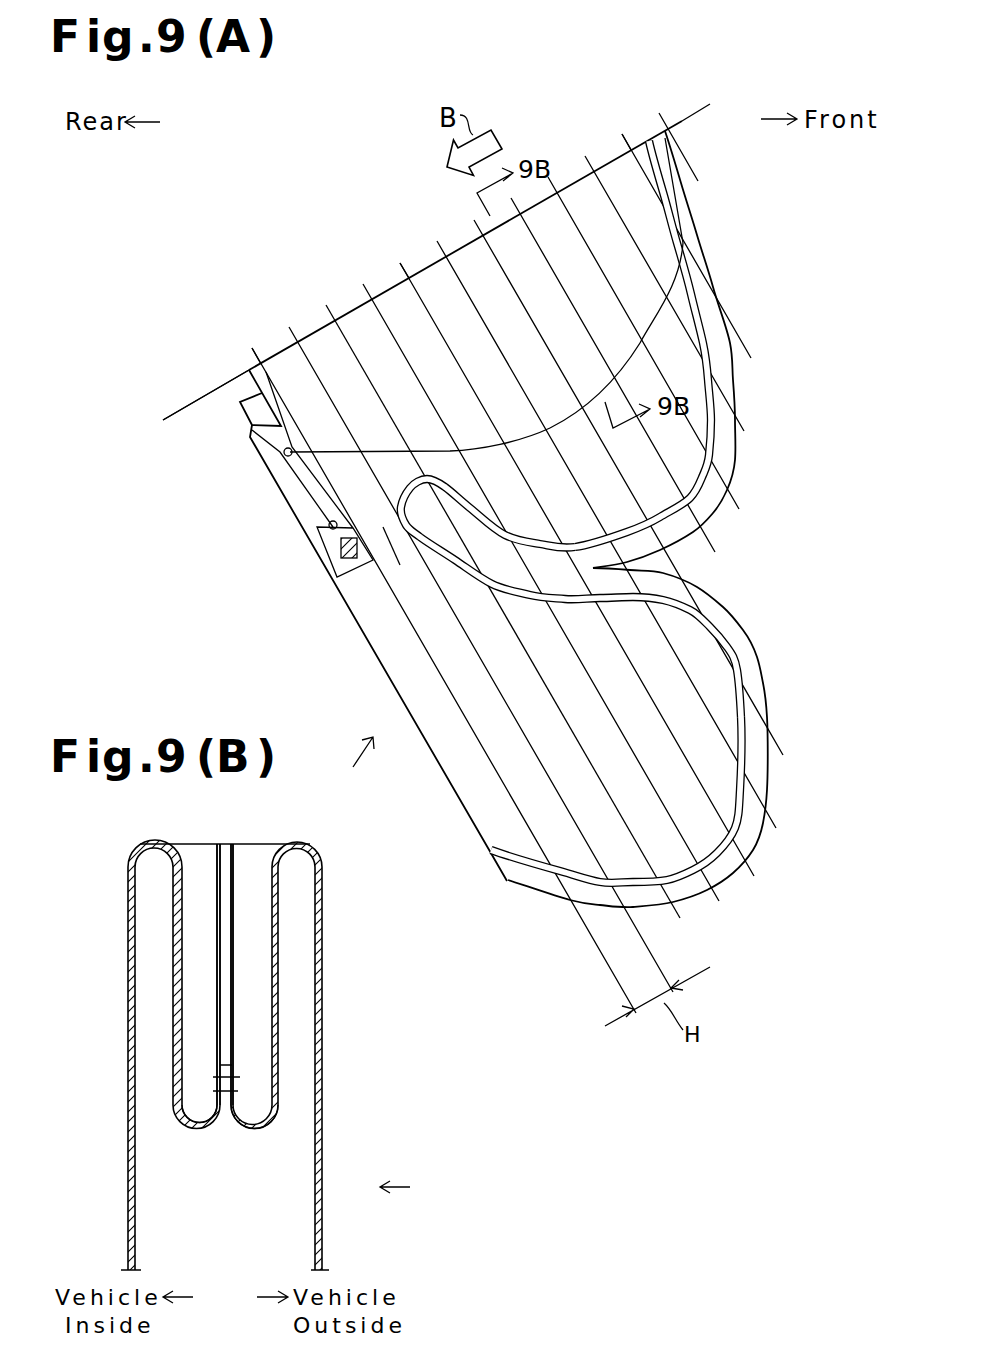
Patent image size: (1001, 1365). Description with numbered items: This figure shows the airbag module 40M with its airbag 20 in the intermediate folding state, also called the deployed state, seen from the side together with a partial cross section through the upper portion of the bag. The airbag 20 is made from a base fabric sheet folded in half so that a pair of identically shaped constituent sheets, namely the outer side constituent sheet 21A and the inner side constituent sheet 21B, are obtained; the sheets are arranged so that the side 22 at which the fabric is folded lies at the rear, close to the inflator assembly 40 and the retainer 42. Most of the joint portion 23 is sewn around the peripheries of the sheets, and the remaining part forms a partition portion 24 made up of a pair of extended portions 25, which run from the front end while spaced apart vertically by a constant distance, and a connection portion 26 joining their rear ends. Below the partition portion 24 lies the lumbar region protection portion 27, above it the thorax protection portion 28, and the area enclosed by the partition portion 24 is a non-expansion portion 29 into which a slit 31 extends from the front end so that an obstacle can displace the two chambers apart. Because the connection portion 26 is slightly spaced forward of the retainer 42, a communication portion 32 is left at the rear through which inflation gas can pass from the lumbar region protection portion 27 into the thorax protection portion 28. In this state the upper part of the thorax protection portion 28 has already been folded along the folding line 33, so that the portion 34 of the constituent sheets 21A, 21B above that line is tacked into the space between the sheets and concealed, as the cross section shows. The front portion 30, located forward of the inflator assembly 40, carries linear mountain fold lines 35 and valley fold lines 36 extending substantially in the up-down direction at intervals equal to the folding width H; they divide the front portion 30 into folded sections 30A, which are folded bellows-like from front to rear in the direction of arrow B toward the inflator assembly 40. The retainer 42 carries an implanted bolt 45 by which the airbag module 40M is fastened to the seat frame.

In FIG. 9A, the airbag 20 is at (722, 306).
In FIG. 9B, the airbag 20 is at (243, 1055).
In FIG. 9A, the outer side constituent sheet 21A is at (702, 246).
In FIG. 9B, the outer side constituent sheet 21A is at (323, 1128).
In FIG. 9B, the inner side constituent sheet 21B is at (128, 1128).
In FIG. 9A, the side 22 is at (391, 682).
In FIG. 9A, the joint portion 23 is at (752, 752).
In FIG. 9B, the joint portion 23 is at (226, 1086).
In FIG. 9A, the partition portion 24 is at (503, 600).
In FIG. 9A, the extended portions 25 is at (510, 528).
In FIG. 9A, the connection portion 26 is at (420, 439).
In FIG. 9A, the lumbar region protection portion 27 is at (573, 560).
In FIG. 9A, the thorax protection portion 28 is at (465, 519).
In FIG. 9B, the thorax protection portion 28 is at (225, 1242).
In FIG. 9A, the non-expansion portion 29 is at (456, 526).
In FIG. 9A, the front portion 30 is at (722, 606).
In FIG. 9A, the folded sections 30A is at (383, 297).
In FIG. 9A, the slit 31 is at (611, 424).
In FIG. 9A, the communication portion 32 is at (397, 548).
In FIG. 9A, the folding line 33 is at (700, 122).
In FIG. 9A, the portion 34 is at (578, 426).
In FIG. 9B, the portion 34 is at (252, 1130).
In FIG. 9A, the mountain fold lines 35 is at (748, 440).
In FIG. 9A, the valley fold lines 36 is at (334, 321).
In FIG. 9A, the inflator assembly 40 is at (247, 428).
In FIG. 9A, the retainer 42 is at (247, 428).
In FIG. 9A, the bolt 45 is at (283, 458).
In FIG. 9A, the airbag module 40M is at (346, 768).
In FIG. 9B, the airbag module 40M is at (425, 1189).